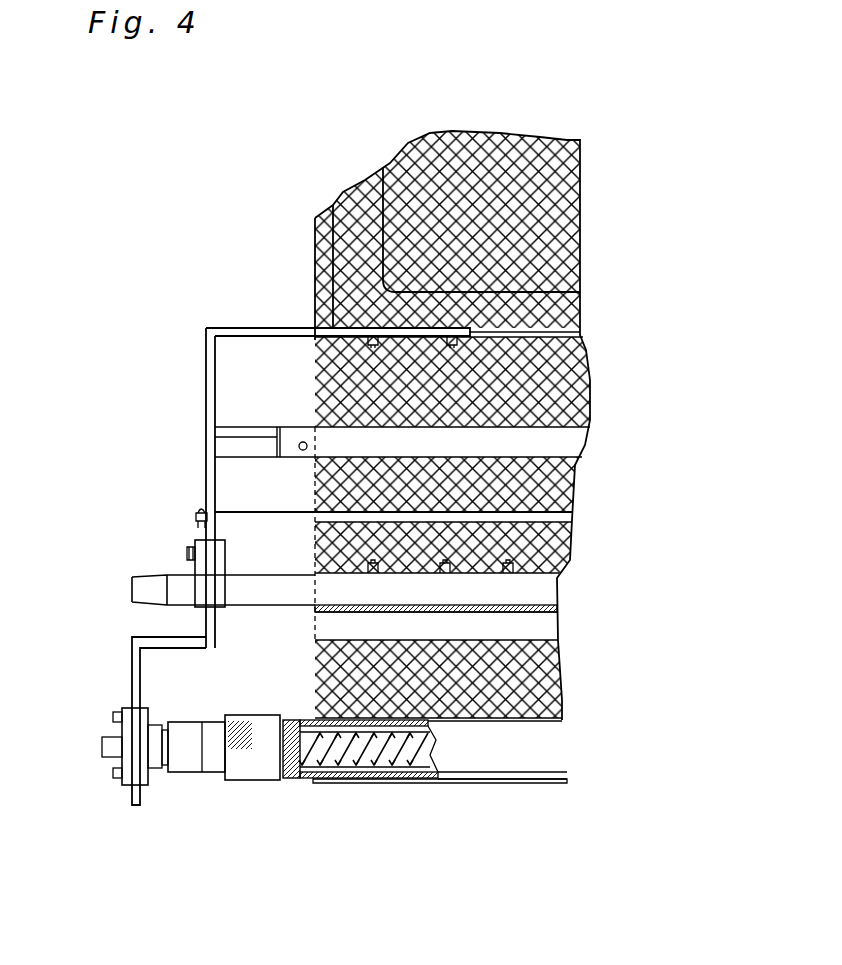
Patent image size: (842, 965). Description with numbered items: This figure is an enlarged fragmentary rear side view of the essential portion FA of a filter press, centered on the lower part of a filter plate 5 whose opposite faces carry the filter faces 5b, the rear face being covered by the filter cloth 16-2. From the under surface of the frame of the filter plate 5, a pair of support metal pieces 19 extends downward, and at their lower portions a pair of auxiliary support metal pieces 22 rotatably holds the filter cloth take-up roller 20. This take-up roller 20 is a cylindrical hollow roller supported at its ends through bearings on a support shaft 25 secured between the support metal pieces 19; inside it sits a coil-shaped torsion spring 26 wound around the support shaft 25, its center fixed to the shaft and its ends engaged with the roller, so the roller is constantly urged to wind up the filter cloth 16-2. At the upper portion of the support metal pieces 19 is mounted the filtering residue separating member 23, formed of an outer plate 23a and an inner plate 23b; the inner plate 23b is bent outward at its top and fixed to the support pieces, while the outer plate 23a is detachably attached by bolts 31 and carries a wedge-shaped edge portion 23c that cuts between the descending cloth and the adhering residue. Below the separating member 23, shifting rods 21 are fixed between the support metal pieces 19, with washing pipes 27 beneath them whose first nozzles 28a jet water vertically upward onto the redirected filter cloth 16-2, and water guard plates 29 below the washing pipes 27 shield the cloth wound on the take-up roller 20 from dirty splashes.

The furnace assembly FA is at (570, 113).
The filter plate 5 is at (331, 240).
The filter face 5b is at (442, 189).
The filter cloth 16-2 is at (313, 372).
The support metal piece 19 is at (205, 478).
The filter cloth take-up roller 20 is at (418, 782).
The shifting rod 21 is at (240, 516).
The auxiliary support metal piece 22 is at (132, 658).
The filtering residue separating member 23 is at (533, 465).
The outer plate 23a is at (520, 437).
The inner plate 23b is at (257, 430).
The wedge-shaped edge portion 23c is at (503, 384).
The support shaft 25 is at (292, 745).
The torsion spring 26 is at (290, 717).
The washing pipe 27 is at (258, 592).
The first nozzle 28a is at (519, 566).
The water guard plate 29 is at (537, 623).
The bolt 31 is at (298, 446).